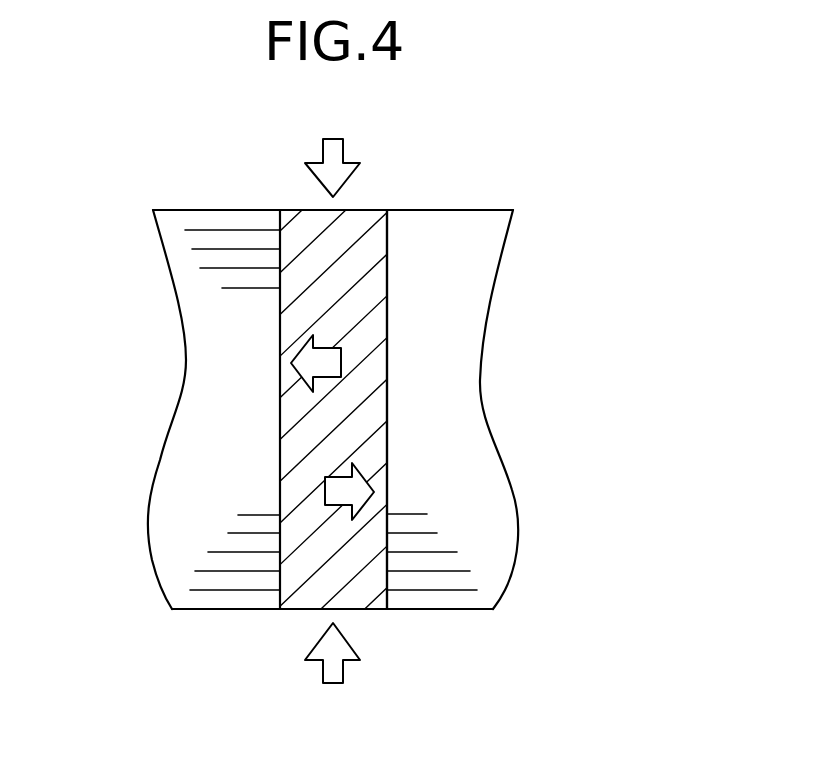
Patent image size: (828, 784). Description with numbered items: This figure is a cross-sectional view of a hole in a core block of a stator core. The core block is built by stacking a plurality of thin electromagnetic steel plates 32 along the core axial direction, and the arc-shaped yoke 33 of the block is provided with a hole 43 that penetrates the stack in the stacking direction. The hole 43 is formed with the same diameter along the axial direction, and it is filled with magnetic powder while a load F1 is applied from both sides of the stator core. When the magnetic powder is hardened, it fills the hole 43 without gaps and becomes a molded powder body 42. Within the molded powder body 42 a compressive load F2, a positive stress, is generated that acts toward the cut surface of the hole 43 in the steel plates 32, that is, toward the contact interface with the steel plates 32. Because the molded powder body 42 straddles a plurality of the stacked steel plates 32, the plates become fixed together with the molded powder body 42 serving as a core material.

The steel plate 32 is at (193, 238).
The yoke 33 is at (468, 314).
The molded powder body 42 is at (312, 222).
The hole 43 is at (386, 229).
The load F1 is at (332, 415).
The compressive load F2 is at (323, 493).